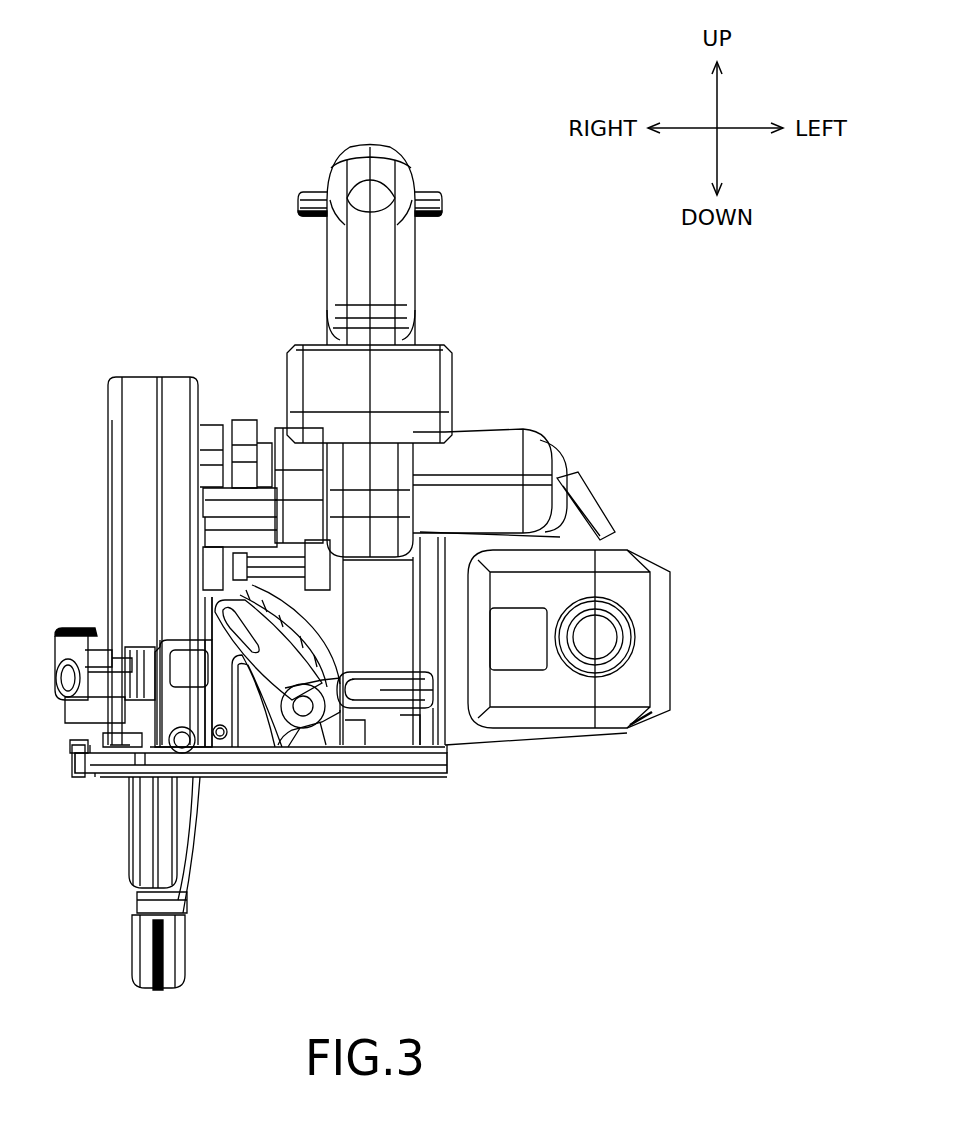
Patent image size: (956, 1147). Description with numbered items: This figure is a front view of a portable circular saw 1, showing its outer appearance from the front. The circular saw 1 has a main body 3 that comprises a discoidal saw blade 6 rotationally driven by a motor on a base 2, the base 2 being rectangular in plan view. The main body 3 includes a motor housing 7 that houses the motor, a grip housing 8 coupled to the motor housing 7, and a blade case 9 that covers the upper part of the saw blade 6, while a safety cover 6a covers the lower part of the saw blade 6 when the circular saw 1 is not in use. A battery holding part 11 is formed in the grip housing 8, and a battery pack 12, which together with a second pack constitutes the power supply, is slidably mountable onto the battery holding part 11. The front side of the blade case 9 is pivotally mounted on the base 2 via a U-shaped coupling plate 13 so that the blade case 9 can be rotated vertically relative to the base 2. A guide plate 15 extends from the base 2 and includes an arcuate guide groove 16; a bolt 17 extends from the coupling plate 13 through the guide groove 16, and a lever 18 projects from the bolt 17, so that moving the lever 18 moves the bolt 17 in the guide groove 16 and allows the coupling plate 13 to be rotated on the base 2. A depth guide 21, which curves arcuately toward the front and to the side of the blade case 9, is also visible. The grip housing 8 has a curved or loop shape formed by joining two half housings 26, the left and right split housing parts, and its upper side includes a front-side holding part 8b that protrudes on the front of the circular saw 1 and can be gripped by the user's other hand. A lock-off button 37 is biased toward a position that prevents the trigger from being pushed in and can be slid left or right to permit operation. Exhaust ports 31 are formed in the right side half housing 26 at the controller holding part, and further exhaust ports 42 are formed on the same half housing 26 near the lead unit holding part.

The circular saw 1 is at (502, 244).
The base 2 is at (395, 772).
The main body 3 is at (202, 350).
The saw blade 6 is at (158, 822).
The safety cover 6a is at (148, 950).
The motor housing 7 is at (635, 690).
The grip housing 8 is at (386, 135).
The holding part 8b is at (424, 380).
The blade case 9 is at (135, 385).
The battery holding part 11 is at (537, 450).
The battery pack 12 is at (600, 524).
The coupling plate 13 is at (195, 705).
The guide plate 15 is at (220, 665).
The guide groove 16 is at (258, 658).
The bolt 17 is at (303, 710).
The lever 18 is at (358, 688).
The depth guide 21 is at (238, 430).
The half housing 26 is at (352, 238).
The exhaust ports 31 is at (262, 455).
The lock-off button 37 is at (437, 198).
The exhaust ports 42 is at (318, 450).